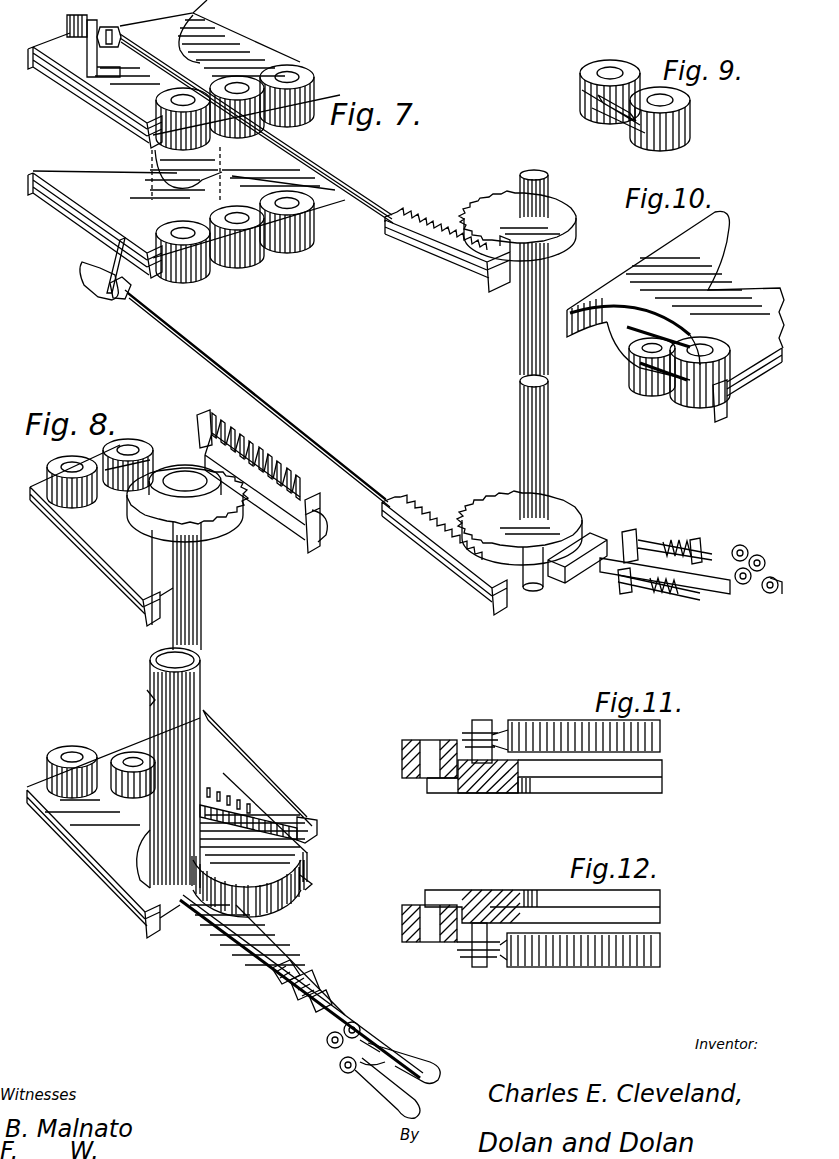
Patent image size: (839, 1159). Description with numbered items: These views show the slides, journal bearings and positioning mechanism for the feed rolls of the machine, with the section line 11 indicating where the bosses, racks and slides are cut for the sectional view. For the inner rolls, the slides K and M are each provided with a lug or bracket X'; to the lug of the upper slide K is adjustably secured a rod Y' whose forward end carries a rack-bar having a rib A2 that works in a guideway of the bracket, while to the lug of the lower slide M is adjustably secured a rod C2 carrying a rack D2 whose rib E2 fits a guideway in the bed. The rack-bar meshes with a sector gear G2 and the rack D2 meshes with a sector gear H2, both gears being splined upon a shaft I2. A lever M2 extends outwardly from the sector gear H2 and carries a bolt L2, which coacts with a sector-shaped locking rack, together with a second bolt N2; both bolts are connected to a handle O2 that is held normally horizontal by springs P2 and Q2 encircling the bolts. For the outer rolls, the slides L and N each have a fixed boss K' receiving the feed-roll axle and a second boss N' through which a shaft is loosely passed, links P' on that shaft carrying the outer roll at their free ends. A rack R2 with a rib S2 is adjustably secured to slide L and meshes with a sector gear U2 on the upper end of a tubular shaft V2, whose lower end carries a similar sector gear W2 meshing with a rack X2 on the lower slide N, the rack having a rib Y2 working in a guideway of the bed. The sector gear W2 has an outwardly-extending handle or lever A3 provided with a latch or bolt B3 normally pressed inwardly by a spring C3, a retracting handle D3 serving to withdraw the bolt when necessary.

In FIG. 7, the slide K is at (184, 74).
In FIG. 7, the lug or bracket X' is at (104, 46).
In FIG. 7, the rod Y' is at (256, 137).
In FIG. 7, the slide M is at (186, 212).
In FIG. 7, the rib A2 is at (442, 260).
In FIG. 7, the sector gear G2 is at (490, 205).
In FIG. 7, the rod C2 is at (296, 432).
In FIG. 7, the rack end stops 11 is at (196, 412).
In FIG. 8, the rack end stops 11 is at (312, 518).
In FIG. 8, the rack R2 is at (315, 498).
In FIG. 11, the rack R2 is at (662, 737).
In FIG. 8, the rib S2 is at (321, 537).
In FIG. 8, the sector gear U2 is at (215, 493).
In FIG. 8, the slide L is at (106, 527).
In FIG. 11, the slide L is at (487, 791).
In FIG. 10, the fixed boss K' is at (726, 375).
In FIG. 10, the second boss N' is at (656, 372).
In FIG. 11, the second boss N' is at (455, 743).
In FIG. 12, the second boss N' is at (454, 936).
In FIG. 8, the tubular shaft V2 is at (201, 712).
In FIG. 8, the slide N is at (113, 828).
In FIG. 10, the slide N is at (675, 295).
In FIG. 12, the slide N is at (542, 891).
In FIG. 8, the rack X2 is at (305, 845).
In FIG. 12, the rack X2 is at (597, 962).
In FIG. 8, the rib Y2 is at (318, 840).
In FIG. 8, the sector gear W2 is at (186, 916).
In FIG. 8, the handle or lever A3 is at (270, 962).
In FIG. 8, the latch or bolt B3 is at (300, 972).
In FIG. 8, the spring C3 is at (300, 1012).
In FIG. 8, the retracting handle D3 is at (380, 1075).
In FIG. 7, the shaft I2 is at (530, 466).
In FIG. 7, the sector gear H2 is at (489, 502).
In FIG. 7, the lever M2 is at (590, 530).
In FIG. 7, the rib E2 is at (432, 560).
In FIG. 7, the rack D2 is at (468, 572).
In FIG. 7, the bolt L2 is at (620, 576).
In FIG. 7, the second bolt N2 is at (624, 535).
In FIG. 7, the spring Q2 is at (692, 542).
In FIG. 7, the spring P2 is at (672, 600).
In FIG. 7, the handle O2 is at (767, 595).
In FIG. 9, the link P' is at (617, 105).